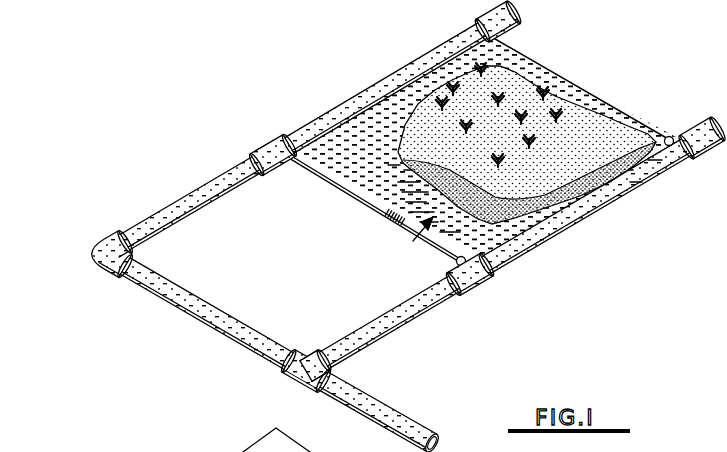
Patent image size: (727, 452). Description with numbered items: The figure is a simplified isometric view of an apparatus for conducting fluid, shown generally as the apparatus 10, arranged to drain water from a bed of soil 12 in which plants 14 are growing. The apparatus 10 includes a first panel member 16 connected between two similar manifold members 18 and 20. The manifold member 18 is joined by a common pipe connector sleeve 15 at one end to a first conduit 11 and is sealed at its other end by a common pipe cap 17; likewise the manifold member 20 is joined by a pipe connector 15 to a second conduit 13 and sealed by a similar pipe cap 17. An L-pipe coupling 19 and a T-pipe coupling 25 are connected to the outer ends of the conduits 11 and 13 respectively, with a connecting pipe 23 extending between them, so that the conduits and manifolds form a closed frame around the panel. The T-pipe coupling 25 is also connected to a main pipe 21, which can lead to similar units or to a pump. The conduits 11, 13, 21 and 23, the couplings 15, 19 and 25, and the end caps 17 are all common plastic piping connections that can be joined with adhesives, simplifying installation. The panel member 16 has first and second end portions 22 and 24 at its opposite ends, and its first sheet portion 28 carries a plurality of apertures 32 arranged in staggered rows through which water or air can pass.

The apparatus for conducting fluid 10 is at (201, 121).
The first conduit 11 is at (190, 198).
The bed of soil 12 is at (582, 120).
The second conduit 13 is at (410, 318).
The plants 14 is at (547, 88).
The pipe connector sleeve 15 is at (258, 152).
The first panel member 16 is at (413, 241).
The pipe cap 17 is at (517, 13).
The manifold member 18 is at (343, 107).
The L-pipe coupling 19 is at (90, 252).
The manifold member 20 is at (557, 220).
The main pipe 21 is at (398, 412).
The first end portion 22 is at (496, 38).
The connecting pipe 23 is at (205, 318).
The second end portion 24 is at (653, 132).
The T-pipe coupling 25 is at (300, 366).
The first sheet portion 28 is at (367, 178).
The apertures 32 is at (397, 215).